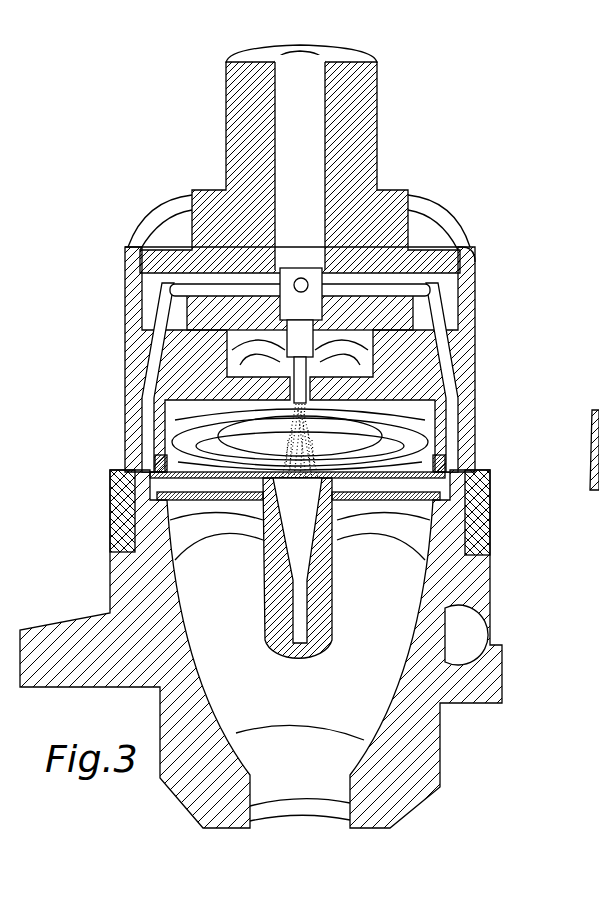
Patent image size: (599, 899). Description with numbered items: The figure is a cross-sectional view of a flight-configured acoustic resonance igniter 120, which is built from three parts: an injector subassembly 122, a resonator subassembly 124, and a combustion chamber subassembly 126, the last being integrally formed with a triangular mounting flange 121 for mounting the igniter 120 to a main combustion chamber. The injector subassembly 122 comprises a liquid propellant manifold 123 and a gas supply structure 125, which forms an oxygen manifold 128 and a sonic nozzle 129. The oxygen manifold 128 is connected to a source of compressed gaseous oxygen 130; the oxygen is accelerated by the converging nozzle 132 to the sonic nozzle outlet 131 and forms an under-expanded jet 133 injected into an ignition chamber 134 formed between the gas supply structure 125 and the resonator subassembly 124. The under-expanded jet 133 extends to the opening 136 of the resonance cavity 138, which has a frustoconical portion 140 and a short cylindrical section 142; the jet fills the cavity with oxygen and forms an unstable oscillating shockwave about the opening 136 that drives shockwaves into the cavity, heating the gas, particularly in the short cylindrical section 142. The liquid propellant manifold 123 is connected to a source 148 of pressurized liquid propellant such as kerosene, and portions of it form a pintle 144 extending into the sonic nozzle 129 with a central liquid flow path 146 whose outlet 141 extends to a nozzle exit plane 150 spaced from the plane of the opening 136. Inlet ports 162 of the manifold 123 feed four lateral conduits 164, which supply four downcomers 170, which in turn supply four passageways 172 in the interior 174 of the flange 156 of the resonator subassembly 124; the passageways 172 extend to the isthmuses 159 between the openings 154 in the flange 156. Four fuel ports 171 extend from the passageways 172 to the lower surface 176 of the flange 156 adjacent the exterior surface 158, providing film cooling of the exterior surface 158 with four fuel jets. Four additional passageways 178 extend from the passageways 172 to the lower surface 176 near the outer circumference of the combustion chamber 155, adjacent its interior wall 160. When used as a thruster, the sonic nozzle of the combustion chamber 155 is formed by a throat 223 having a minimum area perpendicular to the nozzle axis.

The acoustic resonance igniter 120 is at (505, 265).
The triangular mounting flange 121 is at (62, 615).
The injector subassembly 122 is at (125, 297).
The liquid propellant manifold 123 is at (408, 212).
The resonator subassembly 124 is at (450, 478).
The gas supply structure 125 is at (478, 305).
The combustion chamber subassembly 126 is at (372, 712).
The oxygen manifold 128 is at (380, 345).
The sonic nozzle 129 is at (400, 360).
The source of compressed gaseous oxygen 130 is at (235, 358).
The sonic nozzle outlet 131 is at (400, 402).
The converging nozzle 132 is at (300, 312).
The under-expanded jet 133 is at (152, 462).
The ignition chamber 134 is at (165, 428).
The opening of the resonance cavity 136 is at (213, 503).
The resonance cavity 138 is at (336, 588).
The frustoconical portion 140 is at (330, 565).
The outlet 141 is at (420, 436).
The short cylindrical section 142 is at (265, 627).
The pintle 144 is at (294, 382).
The central liquid flow path 146 is at (318, 390).
The source of pressurized liquid propellant 148 is at (320, 52).
The nozzle exit plane 150 is at (165, 437).
The openings 154 is at (440, 503).
The combustion chamber 155 is at (217, 660).
The flange 156 is at (378, 503).
The exterior surface 158 is at (336, 615).
The isthmuses 159 is at (430, 452).
The interior wall 160 is at (340, 668).
The inlet ports 162 is at (305, 268).
The lateral conduits 164 is at (192, 215).
The downcomers 170 is at (135, 342).
The fuel ports 171 is at (262, 503).
The passageways 172 is at (133, 543).
The interior of the flange 174 is at (135, 473).
The lower surface 176 is at (238, 503).
The additional passageways 178 is at (133, 526).
The throat 223 is at (345, 800).